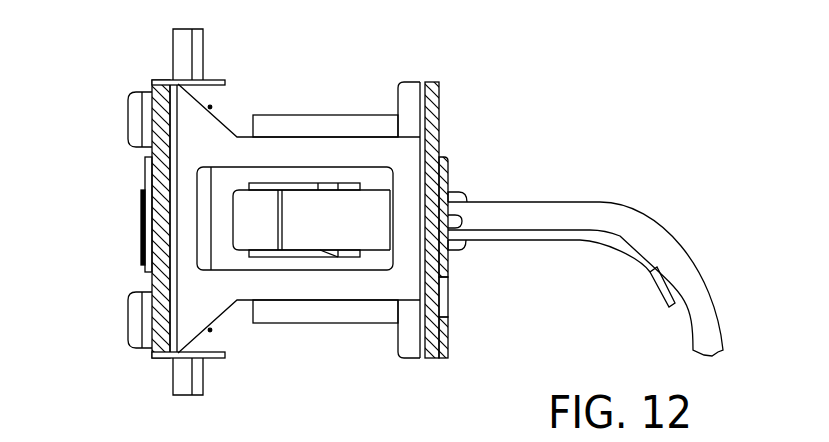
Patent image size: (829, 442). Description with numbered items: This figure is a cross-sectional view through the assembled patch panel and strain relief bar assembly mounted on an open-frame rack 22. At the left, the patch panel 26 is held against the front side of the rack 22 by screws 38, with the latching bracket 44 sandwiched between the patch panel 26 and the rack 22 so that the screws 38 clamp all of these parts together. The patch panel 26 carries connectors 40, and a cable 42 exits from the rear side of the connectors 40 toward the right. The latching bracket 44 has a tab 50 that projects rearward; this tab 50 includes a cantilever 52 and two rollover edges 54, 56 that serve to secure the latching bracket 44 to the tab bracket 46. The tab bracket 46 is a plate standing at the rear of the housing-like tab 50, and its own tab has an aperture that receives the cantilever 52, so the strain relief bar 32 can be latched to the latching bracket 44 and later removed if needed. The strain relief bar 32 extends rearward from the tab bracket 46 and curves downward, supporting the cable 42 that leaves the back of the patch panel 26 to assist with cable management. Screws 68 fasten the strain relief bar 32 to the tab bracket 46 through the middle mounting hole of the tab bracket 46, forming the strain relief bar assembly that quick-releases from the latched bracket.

The rack 22 is at (200, 43).
The patch panel 26 is at (152, 280).
The strain relief bar 32 is at (557, 242).
The screws 38 is at (128, 117).
The connectors 40 is at (142, 215).
The cable 42 is at (663, 228).
The latching bracket 44 is at (163, 362).
The tab bracket 46 is at (432, 360).
The tab 50 is at (410, 147).
The cantilever 52 is at (264, 225).
The rollover edge 54 is at (315, 125).
The rollover edge 56 is at (340, 323).
The screws 68 is at (467, 192).